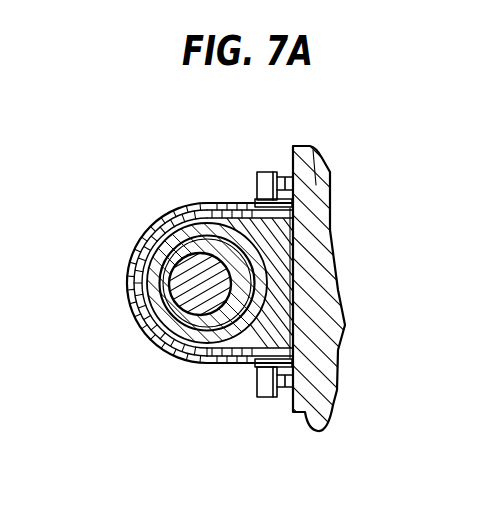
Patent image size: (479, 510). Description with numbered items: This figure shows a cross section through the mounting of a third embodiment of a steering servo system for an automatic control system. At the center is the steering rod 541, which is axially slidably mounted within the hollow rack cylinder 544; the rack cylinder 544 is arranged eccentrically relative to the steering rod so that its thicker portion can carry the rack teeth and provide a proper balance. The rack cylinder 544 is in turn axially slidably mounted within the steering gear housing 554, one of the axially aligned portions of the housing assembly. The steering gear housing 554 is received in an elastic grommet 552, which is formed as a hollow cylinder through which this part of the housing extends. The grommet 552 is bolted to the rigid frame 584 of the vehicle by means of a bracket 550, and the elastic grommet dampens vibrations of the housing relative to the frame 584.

The bracket 550 is at (128, 294).
The steering rod 541 is at (163, 348).
The steering gear housing 554 is at (200, 228).
The rack cylinder 544 is at (238, 282).
The rigid frame 584 is at (287, 222).
The elastic grommet 552 is at (322, 165).